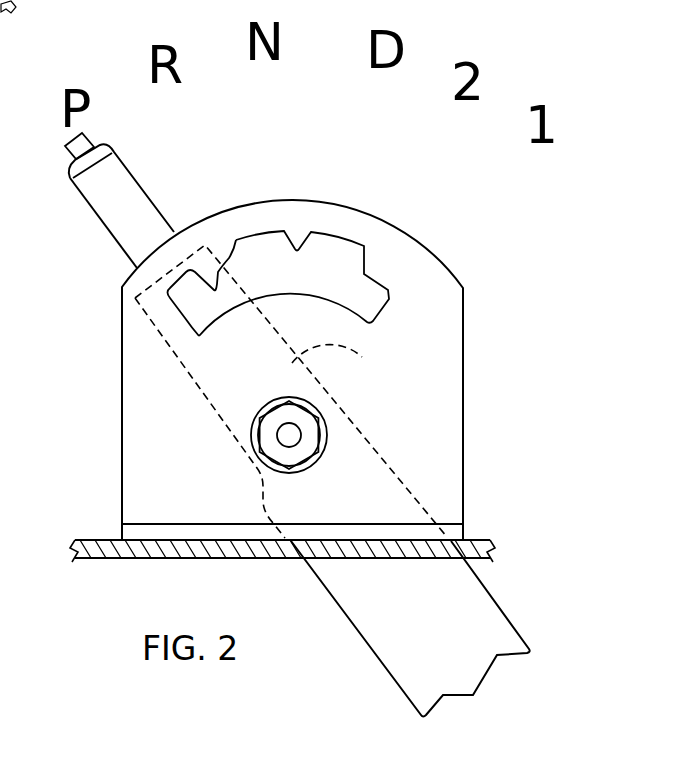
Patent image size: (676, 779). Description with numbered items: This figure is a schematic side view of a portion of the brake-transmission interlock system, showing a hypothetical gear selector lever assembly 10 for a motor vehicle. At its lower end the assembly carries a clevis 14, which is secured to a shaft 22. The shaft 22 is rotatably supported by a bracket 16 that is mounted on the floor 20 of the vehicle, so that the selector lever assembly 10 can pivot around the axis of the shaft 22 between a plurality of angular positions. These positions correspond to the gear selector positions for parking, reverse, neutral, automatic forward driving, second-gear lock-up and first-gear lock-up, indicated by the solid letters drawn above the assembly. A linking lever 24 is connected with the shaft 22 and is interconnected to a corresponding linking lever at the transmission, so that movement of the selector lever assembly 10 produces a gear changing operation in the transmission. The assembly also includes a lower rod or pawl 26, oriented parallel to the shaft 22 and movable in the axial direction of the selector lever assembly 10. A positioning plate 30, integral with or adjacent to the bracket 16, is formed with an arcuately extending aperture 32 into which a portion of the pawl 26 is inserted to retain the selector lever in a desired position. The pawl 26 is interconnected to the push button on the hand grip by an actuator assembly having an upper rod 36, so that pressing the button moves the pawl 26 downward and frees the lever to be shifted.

The gear selector lever assembly 10 is at (218, 197).
The clevis 14 is at (291, 391).
The first bracket 16 is at (320, 367).
The positioning plate 30 is at (399, 250).
The floor 20 is at (163, 560).
The shaft 22 is at (290, 435).
The linking lever 24 is at (505, 613).
The lower rod or pawl 26 is at (182, 330).
The arcuately extending aperture 32 is at (310, 230).
The upper rod 36 is at (83, 136).